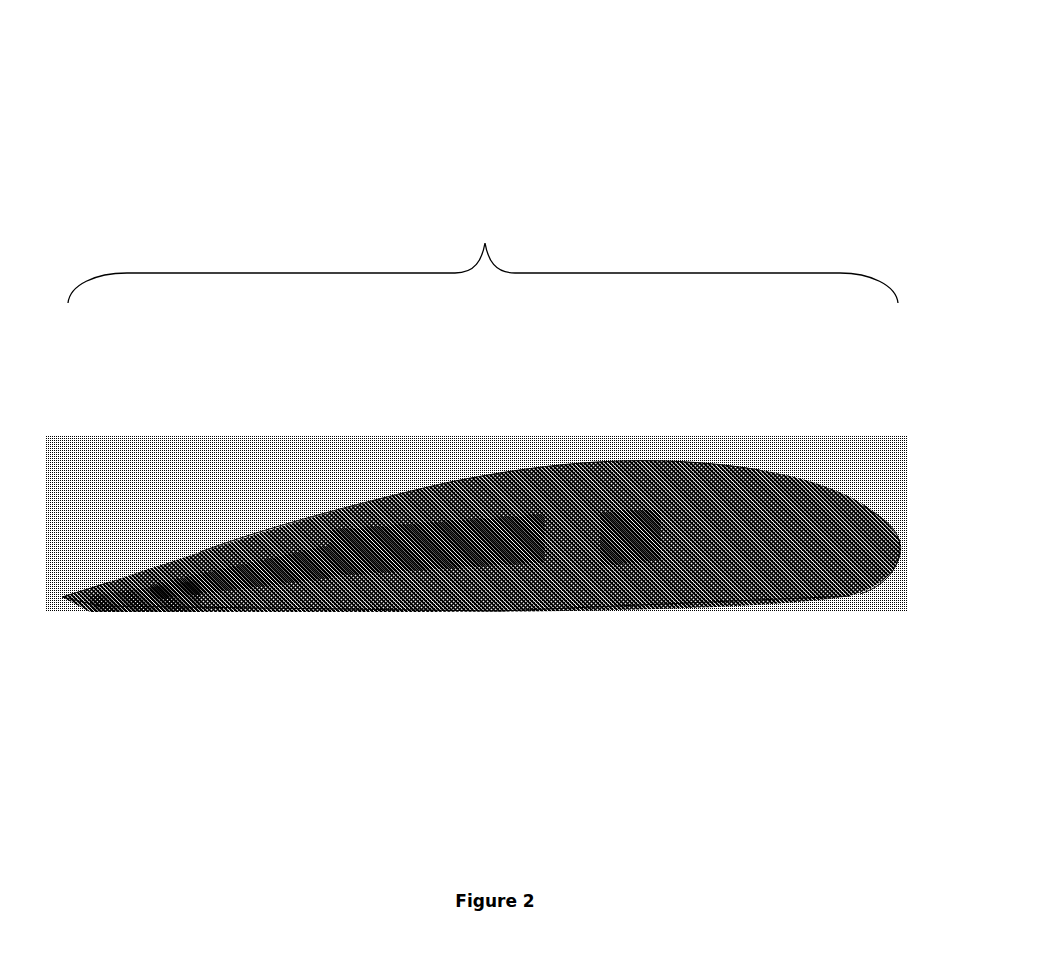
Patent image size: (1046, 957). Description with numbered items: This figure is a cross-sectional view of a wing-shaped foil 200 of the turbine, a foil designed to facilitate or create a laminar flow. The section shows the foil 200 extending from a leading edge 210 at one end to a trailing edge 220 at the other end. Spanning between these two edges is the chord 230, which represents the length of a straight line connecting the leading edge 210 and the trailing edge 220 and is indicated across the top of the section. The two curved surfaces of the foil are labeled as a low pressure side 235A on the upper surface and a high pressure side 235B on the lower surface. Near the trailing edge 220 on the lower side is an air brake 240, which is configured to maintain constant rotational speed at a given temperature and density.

The wing-shaped foil 200 is at (775, 202).
The leading edge 210 is at (892, 528).
The trailing edge 220 is at (68, 595).
The chord 230 is at (483, 243).
The low pressure side 235A is at (428, 490).
The high pressure side 235B is at (317, 588).
The air brake 240 is at (148, 612).